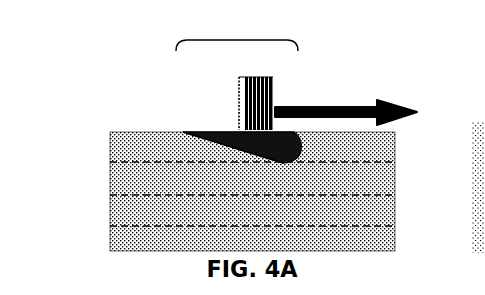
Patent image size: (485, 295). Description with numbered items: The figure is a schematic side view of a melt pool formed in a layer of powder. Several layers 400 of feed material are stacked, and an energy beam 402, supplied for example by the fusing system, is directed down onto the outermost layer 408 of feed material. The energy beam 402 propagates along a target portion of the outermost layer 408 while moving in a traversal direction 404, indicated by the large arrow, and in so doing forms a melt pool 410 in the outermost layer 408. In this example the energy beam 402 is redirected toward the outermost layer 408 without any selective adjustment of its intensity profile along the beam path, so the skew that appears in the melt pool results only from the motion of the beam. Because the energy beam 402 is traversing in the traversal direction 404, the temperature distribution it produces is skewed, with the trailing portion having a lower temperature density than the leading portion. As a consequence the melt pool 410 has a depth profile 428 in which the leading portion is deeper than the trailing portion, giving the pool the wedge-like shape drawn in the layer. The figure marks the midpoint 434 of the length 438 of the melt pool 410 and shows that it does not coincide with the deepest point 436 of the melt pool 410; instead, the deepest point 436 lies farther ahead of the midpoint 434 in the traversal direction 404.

The layers of feed material 400 is at (93, 132).
The energy beam 402 is at (273, 92).
The traversal direction 404 is at (355, 103).
The outermost layer of feed material 408 is at (392, 145).
The melt pool 410 is at (222, 130).
The depth profile 428 is at (299, 147).
The midpoint 434 is at (240, 73).
The deepest point 436 is at (283, 165).
The length 438 is at (237, 40).